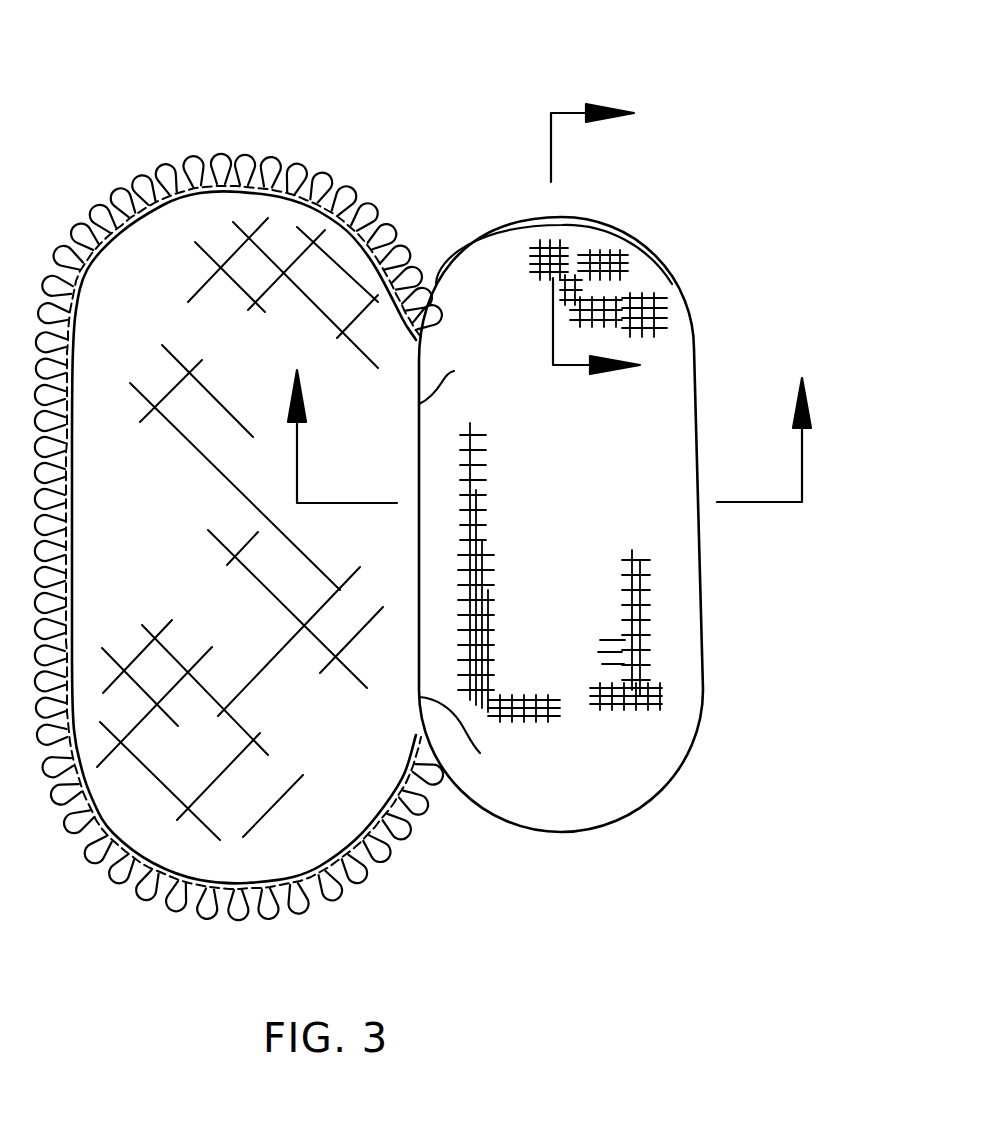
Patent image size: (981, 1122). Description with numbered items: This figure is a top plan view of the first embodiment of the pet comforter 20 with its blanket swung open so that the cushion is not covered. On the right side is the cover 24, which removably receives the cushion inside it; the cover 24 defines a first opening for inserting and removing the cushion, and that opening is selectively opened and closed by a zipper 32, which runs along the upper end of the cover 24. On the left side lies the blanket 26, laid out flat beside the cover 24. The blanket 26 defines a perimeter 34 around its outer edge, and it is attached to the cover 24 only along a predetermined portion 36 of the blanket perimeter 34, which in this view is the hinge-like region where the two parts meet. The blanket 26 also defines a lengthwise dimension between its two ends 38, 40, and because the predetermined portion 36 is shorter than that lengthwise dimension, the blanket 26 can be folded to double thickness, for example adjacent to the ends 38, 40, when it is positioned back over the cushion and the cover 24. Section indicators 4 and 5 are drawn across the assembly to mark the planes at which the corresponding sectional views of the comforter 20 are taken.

The eyeglass case 20 is at (444, 150).
The rigid shell half 24 is at (608, 810).
The cushioned lid half 26 is at (178, 262).
The lip of shell 32 is at (641, 232).
The peripheral edge 34 is at (163, 900).
The hinge 36 is at (472, 566).
The ruffled trim 38 is at (210, 915).
The stitching seam 40 is at (211, 170).
The section line 4- 4 is at (609, 237).
The section line 5- 5 is at (548, 417).